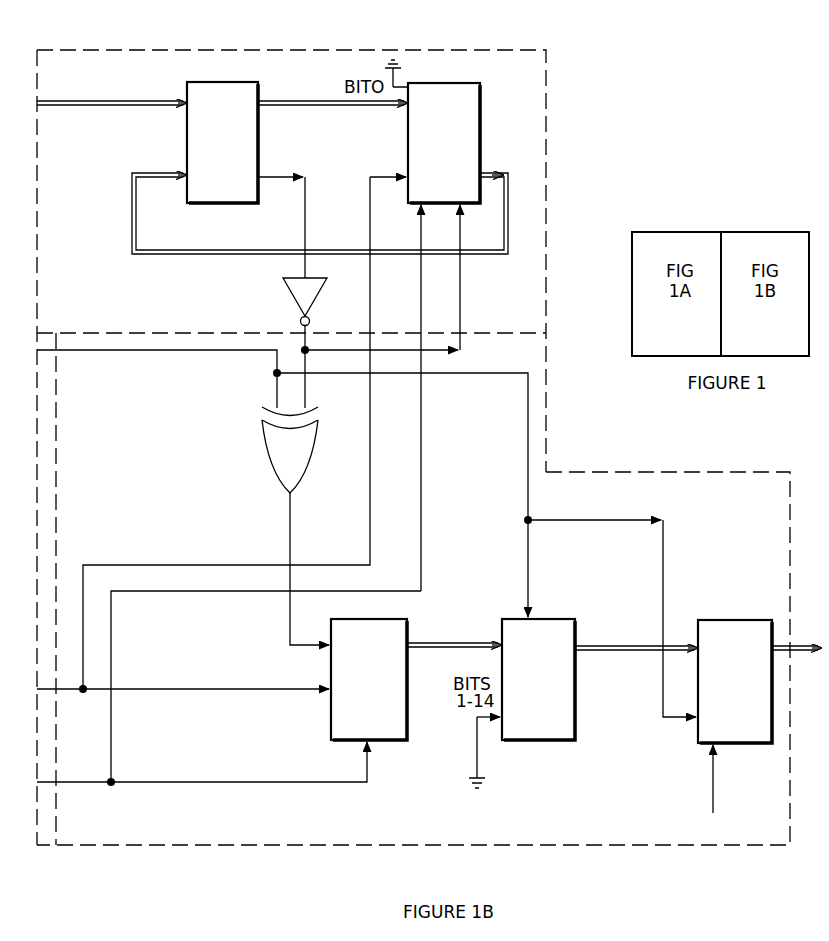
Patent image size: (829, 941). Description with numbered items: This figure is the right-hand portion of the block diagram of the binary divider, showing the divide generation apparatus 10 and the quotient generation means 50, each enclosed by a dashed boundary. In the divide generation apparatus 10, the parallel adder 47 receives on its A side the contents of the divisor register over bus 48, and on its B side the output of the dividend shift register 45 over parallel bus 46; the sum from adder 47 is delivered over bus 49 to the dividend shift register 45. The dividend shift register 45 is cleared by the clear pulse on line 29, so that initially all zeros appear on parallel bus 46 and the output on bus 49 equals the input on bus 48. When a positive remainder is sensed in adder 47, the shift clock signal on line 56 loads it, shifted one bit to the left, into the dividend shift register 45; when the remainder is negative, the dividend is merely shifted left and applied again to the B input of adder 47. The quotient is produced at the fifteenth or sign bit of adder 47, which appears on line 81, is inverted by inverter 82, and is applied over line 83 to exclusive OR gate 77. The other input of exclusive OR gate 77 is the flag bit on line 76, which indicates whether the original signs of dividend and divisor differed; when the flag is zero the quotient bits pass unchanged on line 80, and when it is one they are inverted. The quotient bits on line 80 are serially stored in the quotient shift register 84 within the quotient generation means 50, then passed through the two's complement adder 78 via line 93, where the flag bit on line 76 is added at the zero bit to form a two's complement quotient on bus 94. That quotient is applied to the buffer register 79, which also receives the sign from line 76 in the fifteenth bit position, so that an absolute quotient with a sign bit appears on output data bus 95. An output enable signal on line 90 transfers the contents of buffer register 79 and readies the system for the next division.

The divide generation apparatus 10 is at (180, 47).
The quotient generation means 50 is at (59, 440).
The parallel adder 47 is at (237, 82).
The dividend shift register 45 is at (450, 82).
The bus 48 is at (86, 110).
The bus 49 is at (320, 100).
The parallel bus 46 is at (132, 202).
The line 81 is at (305, 217).
The line 56 is at (370, 219).
The inverter 82 is at (287, 297).
The line 83 is at (461, 297).
The line 76 is at (123, 351).
The line 29 is at (421, 420).
The exclusive OR gate 77 is at (266, 465).
The line 80 is at (291, 517).
The quotient shift register 84 is at (392, 742).
The two's complement adder 78 is at (545, 742).
The buffer register 79 is at (750, 745).
The line 93 is at (447, 645).
The bus 94 is at (611, 651).
The output data bus 95 is at (806, 647).
The line 90 is at (712, 786).